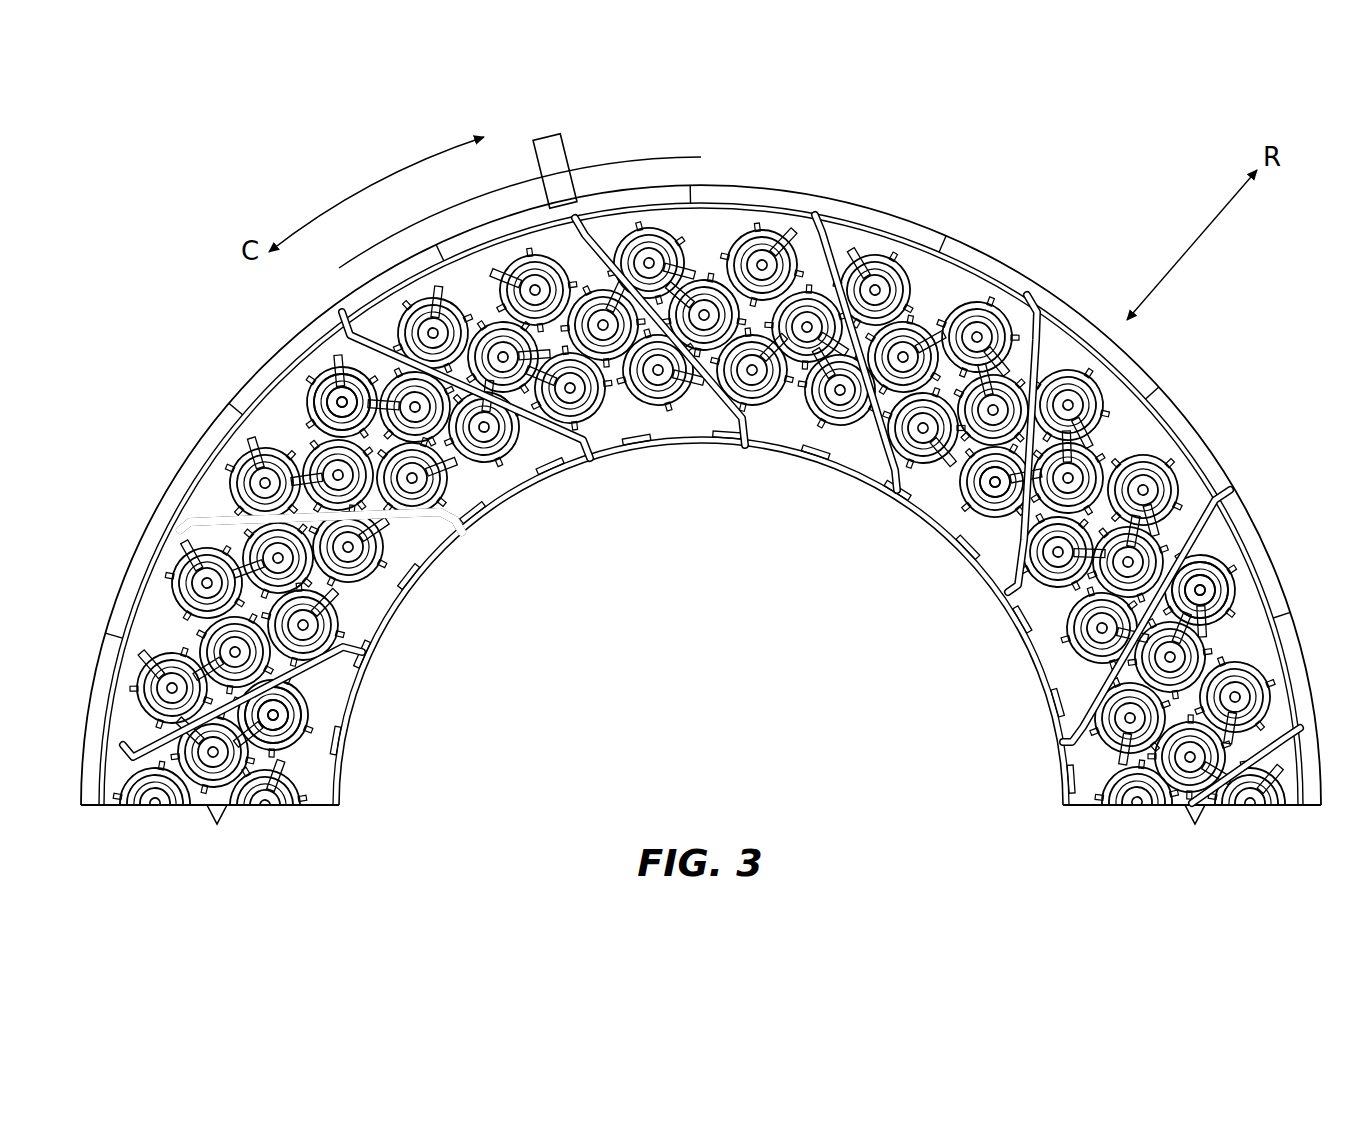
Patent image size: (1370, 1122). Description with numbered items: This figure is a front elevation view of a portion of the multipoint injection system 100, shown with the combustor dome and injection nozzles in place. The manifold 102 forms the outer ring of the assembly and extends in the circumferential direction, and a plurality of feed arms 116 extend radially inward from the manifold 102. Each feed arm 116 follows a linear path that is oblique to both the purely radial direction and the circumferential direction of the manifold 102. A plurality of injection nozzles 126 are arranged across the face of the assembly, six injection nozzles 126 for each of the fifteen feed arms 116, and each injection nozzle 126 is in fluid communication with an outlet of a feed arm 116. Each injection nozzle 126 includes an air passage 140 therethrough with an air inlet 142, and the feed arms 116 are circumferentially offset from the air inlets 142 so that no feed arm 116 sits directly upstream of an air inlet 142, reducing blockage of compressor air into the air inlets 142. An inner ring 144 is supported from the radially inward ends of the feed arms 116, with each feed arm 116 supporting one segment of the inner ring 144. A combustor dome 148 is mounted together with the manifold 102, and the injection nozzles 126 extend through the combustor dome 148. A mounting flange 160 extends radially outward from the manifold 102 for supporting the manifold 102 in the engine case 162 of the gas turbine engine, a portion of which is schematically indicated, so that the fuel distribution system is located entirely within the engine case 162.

The multipoint injection system 100 is at (1160, 156).
The manifold 102 is at (890, 214).
The feed arm 116 is at (835, 222).
The injection nozzle 126 is at (768, 240).
The air passage 140 is at (327, 396).
The air inlet 142 is at (332, 390).
The inner ring 144 is at (615, 456).
The combustor dome 148 is at (205, 496).
The mounting flange 160 is at (576, 150).
The engine case 162 is at (684, 157).